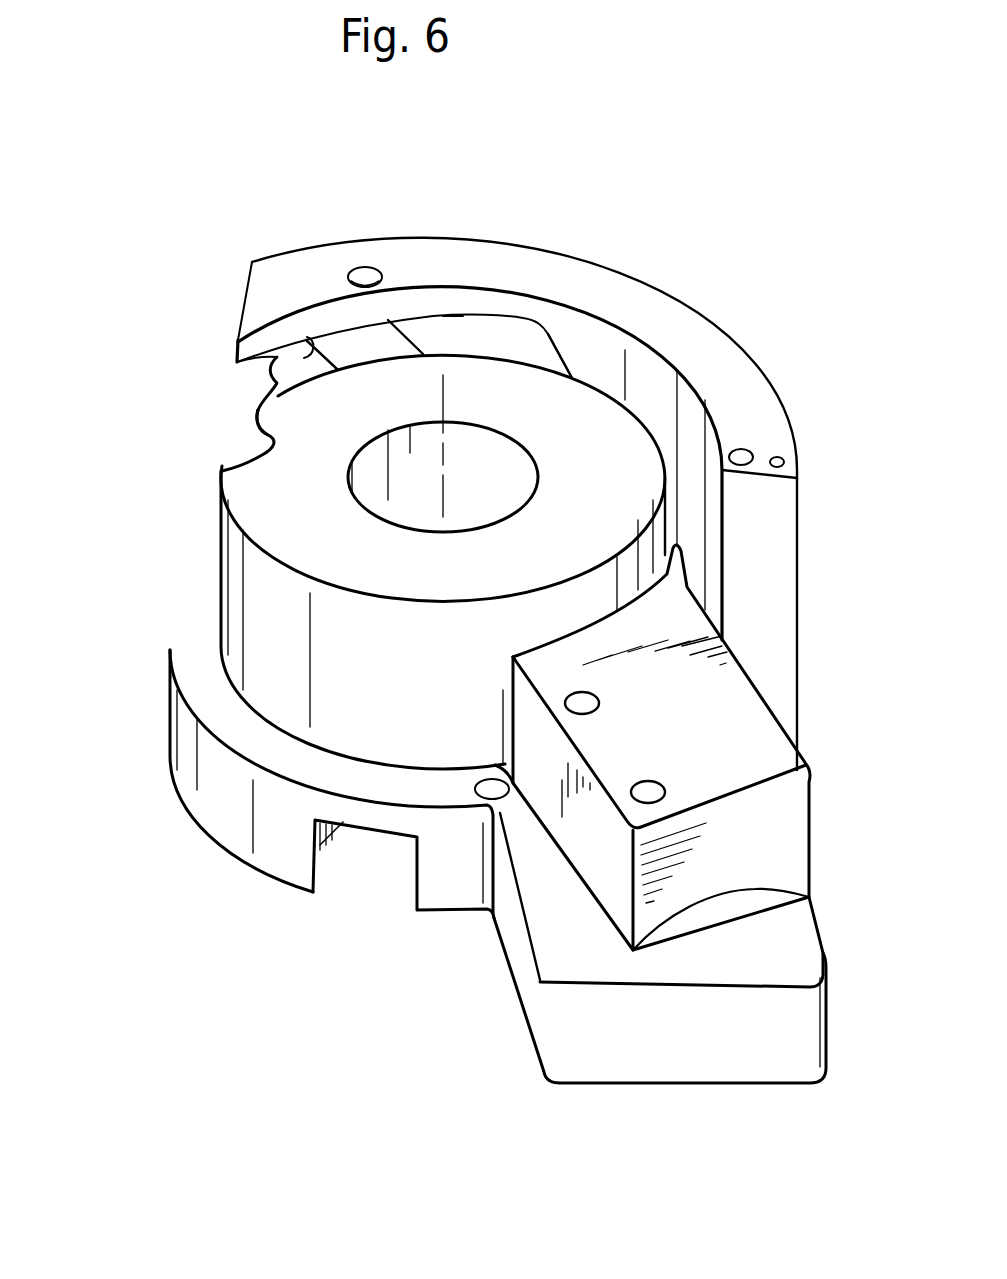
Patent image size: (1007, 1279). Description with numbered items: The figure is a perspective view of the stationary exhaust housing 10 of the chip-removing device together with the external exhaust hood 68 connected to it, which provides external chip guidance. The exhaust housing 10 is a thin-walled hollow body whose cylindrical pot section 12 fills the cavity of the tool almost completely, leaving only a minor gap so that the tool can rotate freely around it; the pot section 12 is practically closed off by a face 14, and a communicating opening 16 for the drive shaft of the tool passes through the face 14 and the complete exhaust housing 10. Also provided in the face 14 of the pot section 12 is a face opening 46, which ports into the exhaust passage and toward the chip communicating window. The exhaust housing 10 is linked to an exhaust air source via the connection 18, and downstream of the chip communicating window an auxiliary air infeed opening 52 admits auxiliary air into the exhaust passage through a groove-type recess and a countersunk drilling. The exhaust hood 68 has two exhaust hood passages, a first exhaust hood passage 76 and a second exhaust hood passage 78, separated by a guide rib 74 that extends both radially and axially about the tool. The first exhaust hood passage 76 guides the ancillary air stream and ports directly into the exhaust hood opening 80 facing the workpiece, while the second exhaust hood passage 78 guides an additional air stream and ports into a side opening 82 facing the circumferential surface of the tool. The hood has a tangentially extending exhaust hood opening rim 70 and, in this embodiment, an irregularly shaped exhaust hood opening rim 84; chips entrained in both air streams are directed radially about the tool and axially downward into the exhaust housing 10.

The exhaust housing 10 is at (215, 790).
The pot section 12 is at (254, 630).
The face 14 is at (257, 500).
The communicating opening 16 is at (500, 483).
The connection 18 is at (813, 968).
The face opening 46 is at (272, 436).
The auxiliary air infeed opening 52 is at (332, 855).
The external exhaust hood 68 is at (688, 338).
The exhaust hood opening rim 70 is at (241, 300).
The guide rib 74 is at (348, 352).
The first exhaust hood passage 76 is at (310, 348).
The second exhaust hood passage 78 is at (531, 343).
The exhaust hood opening 80 is at (248, 388).
The side opening 82 is at (458, 325).
The exhaust hood opening rim 84 is at (258, 363).